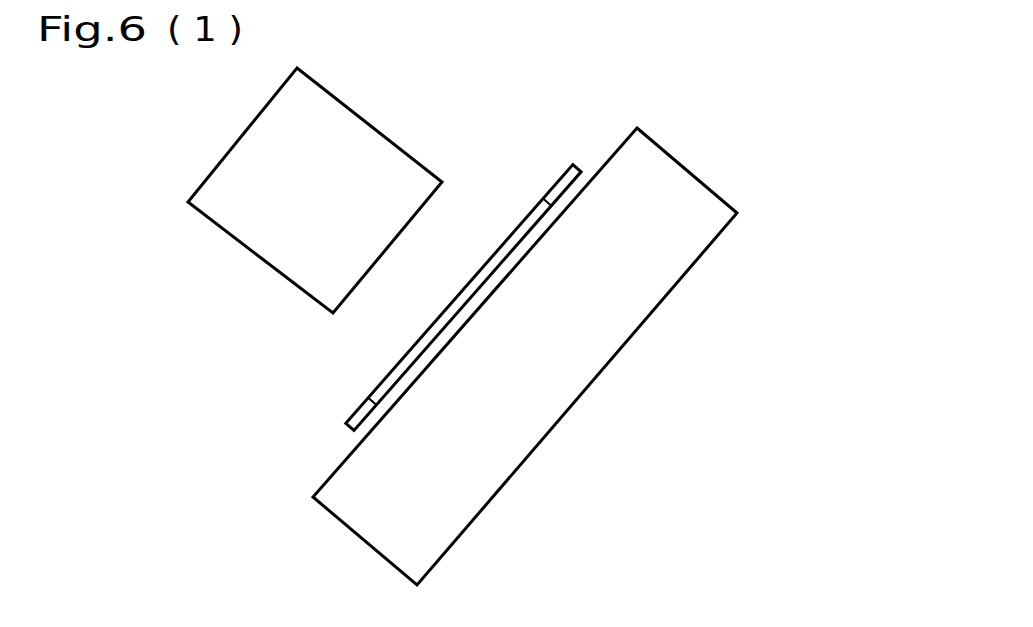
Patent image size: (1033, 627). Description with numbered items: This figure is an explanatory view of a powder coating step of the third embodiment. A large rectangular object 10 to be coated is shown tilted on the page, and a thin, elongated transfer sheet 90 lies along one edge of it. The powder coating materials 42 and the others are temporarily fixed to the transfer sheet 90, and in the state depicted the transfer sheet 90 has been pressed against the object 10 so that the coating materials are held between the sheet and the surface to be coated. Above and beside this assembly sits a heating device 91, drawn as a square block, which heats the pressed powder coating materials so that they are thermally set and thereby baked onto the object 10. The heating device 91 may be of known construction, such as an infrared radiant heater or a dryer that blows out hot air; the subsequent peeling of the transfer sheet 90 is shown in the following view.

The object to be coated 10 is at (463, 500).
The transfer sheet 90 is at (567, 170).
The heating device 91 is at (367, 157).
The powder coating material 42 is at (545, 226).